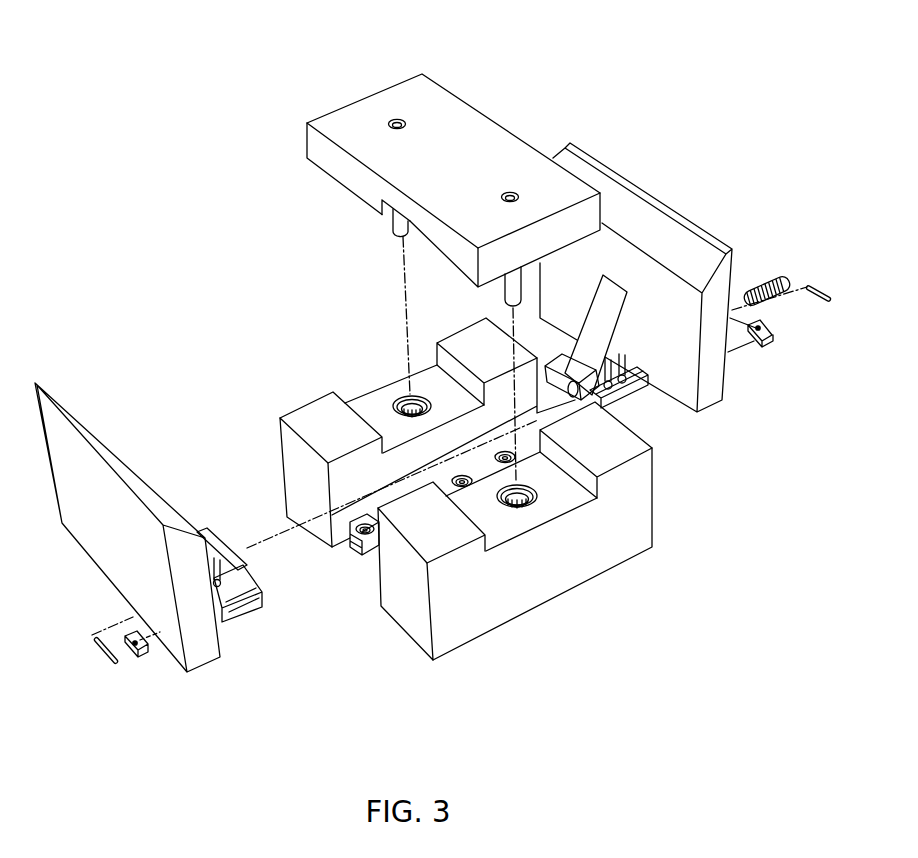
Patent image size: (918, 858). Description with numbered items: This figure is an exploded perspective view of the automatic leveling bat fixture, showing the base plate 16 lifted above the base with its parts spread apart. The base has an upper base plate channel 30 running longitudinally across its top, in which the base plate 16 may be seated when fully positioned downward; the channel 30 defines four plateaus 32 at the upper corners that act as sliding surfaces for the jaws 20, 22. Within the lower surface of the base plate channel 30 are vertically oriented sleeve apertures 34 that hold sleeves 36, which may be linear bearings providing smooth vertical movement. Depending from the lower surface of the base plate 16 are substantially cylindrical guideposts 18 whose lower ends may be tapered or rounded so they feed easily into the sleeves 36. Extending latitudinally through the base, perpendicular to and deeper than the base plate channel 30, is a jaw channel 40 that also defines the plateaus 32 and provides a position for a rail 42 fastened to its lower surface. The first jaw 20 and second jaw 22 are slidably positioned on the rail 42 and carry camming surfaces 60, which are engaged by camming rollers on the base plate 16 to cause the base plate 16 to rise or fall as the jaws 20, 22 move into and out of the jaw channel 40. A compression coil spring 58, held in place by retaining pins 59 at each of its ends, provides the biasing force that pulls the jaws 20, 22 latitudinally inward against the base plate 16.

The base plate 16 is at (428, 93).
The guideposts 18 is at (393, 226).
The first jaw 20 is at (104, 413).
The second jaw 22 is at (653, 186).
The base plate channel 30 is at (570, 495).
The plateaus 32 is at (318, 446).
The sleeve apertures 34 is at (421, 397).
The sleeves 36 is at (403, 397).
The jaw channel 40 is at (360, 486).
The rail 42 is at (367, 553).
The compression coil spring 58 is at (773, 278).
The retaining pins 59 is at (109, 666).
The camming surfaces 60 is at (225, 553).